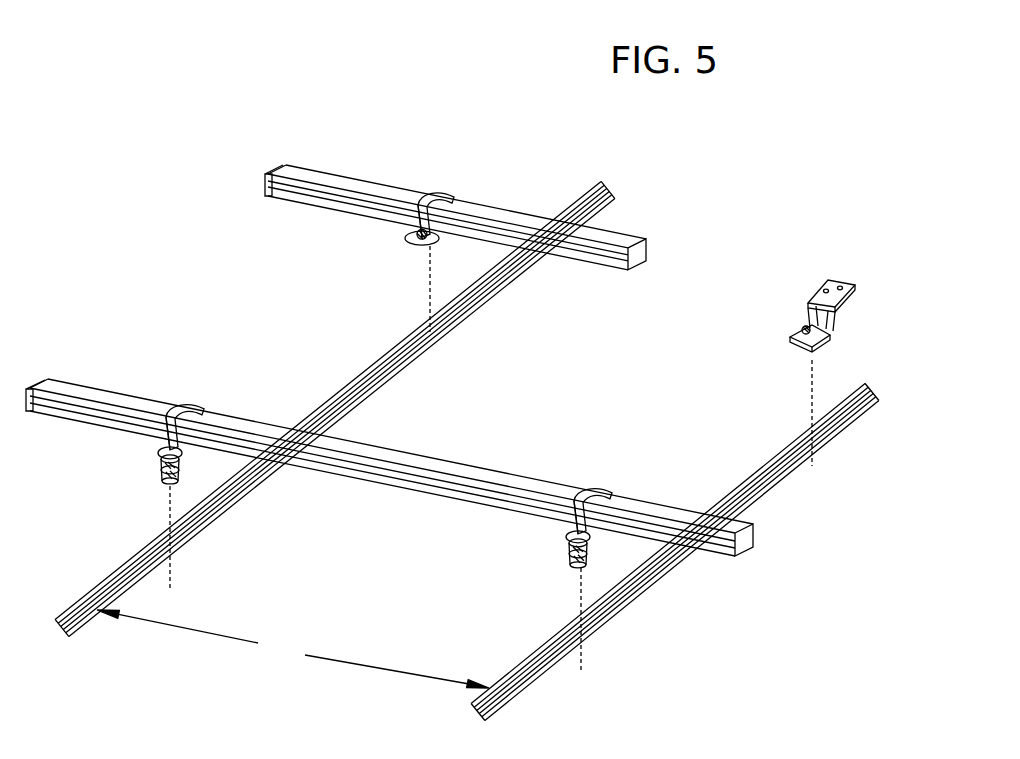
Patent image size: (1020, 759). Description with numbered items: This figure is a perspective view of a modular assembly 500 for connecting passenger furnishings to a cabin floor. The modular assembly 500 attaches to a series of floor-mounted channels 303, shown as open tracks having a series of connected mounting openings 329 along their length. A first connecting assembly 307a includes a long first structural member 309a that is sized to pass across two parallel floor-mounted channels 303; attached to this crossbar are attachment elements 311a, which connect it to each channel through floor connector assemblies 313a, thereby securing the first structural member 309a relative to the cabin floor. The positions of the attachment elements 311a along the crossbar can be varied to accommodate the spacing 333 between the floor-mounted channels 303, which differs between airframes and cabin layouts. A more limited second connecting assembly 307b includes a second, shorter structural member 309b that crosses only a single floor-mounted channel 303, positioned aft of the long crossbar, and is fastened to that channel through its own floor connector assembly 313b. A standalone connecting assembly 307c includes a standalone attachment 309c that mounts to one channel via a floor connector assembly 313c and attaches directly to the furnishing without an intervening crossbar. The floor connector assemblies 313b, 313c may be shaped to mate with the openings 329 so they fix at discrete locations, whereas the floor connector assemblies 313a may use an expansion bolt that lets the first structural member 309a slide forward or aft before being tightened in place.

The modular assembly 500 is at (316, 84).
The floor-mounted channel 303 is at (192, 536).
The mounting openings 329 is at (216, 508).
The first structural member 309a is at (472, 476).
The second structural member 309b is at (342, 178).
The standalone attachment 309c is at (806, 303).
The first connecting assembly 307a is at (687, 614).
The second connecting assembly 307b is at (471, 156).
The standalone connecting assembly 307c is at (778, 242).
The attachment element 311a is at (196, 406).
The floor connector assembly 313a is at (158, 478).
The floor connector assembly 313b is at (410, 243).
The floor connector assembly 313c is at (830, 343).
The spacing 333 is at (293, 649).